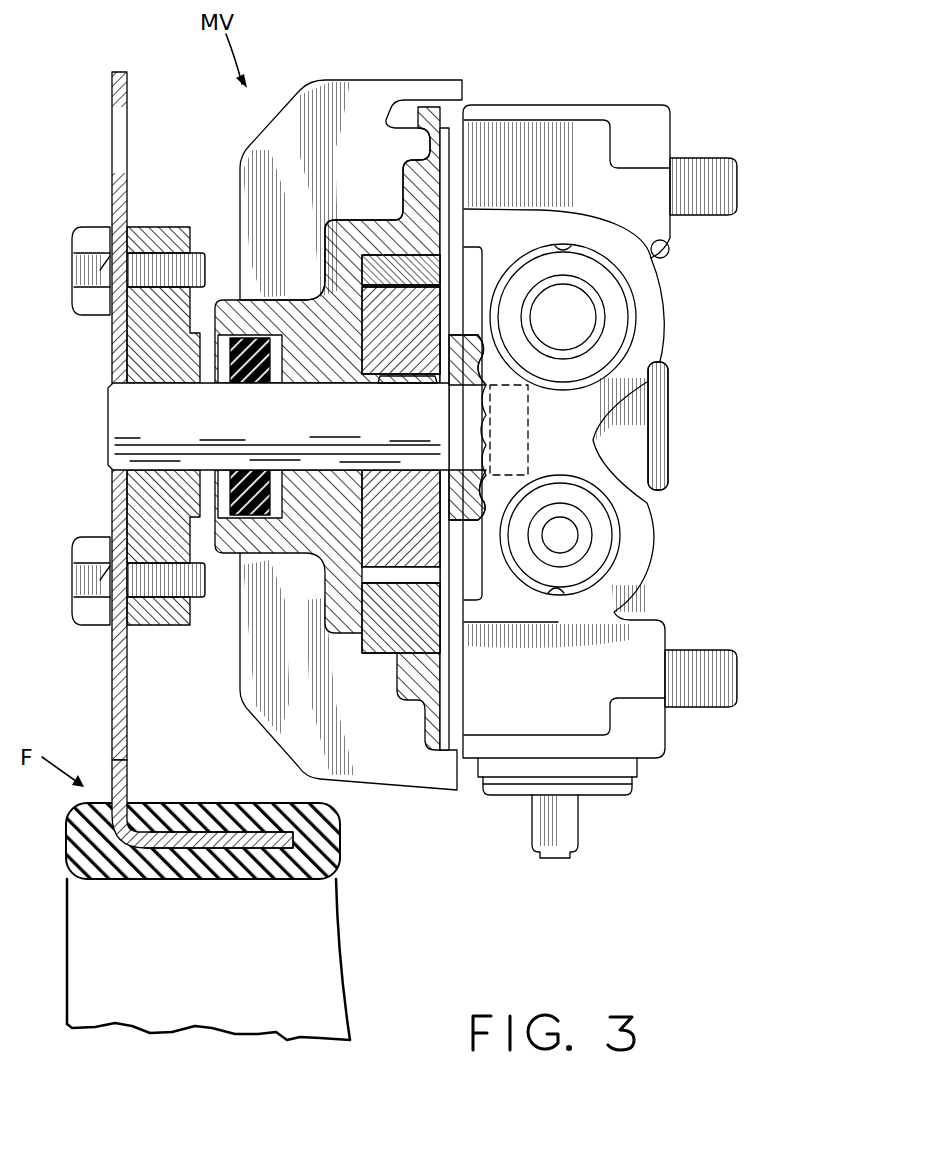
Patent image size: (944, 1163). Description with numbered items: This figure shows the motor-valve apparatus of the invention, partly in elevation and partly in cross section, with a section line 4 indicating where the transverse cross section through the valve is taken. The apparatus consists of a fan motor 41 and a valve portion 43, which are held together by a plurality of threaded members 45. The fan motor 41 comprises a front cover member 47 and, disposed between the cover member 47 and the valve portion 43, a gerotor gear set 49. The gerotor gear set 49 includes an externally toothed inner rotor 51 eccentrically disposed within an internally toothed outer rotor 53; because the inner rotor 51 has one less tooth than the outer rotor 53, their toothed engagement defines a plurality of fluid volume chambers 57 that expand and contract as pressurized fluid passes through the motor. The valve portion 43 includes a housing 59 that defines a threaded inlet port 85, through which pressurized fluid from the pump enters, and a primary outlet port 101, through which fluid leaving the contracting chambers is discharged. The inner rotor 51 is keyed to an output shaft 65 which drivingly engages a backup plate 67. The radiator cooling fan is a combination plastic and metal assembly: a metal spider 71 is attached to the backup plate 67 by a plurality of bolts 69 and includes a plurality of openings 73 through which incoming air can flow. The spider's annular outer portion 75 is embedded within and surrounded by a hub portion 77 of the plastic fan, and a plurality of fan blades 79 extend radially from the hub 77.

The section line 4- 4 is at (500, 35).
The fan motor 41 is at (400, 70).
The valve portion 43 is at (672, 106).
The threaded members 45 is at (702, 172).
The front cover member 47 is at (262, 197).
The gerotor gear set 49 is at (356, 288).
The inner rotor 51 is at (385, 343).
The outer rotor 53 is at (422, 272).
The fluid volume chambers 57 is at (380, 574).
The housing 59 is at (650, 320).
The output shaft 65 is at (126, 411).
The backup plate 67 is at (168, 608).
The bolts 69 is at (88, 233).
The metal spider 71 is at (116, 730).
The openings 73 is at (122, 128).
The annular outer portion 75 is at (233, 812).
The hub portion 77 is at (200, 806).
The fan blades 79 is at (312, 939).
The threaded inlet port 85 is at (563, 250).
The primary outlet port 101 is at (553, 586).